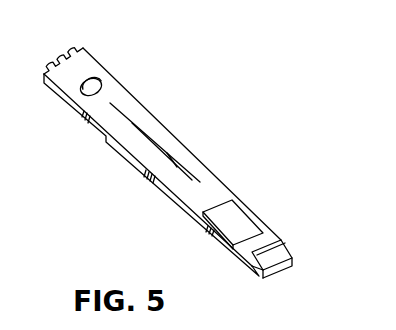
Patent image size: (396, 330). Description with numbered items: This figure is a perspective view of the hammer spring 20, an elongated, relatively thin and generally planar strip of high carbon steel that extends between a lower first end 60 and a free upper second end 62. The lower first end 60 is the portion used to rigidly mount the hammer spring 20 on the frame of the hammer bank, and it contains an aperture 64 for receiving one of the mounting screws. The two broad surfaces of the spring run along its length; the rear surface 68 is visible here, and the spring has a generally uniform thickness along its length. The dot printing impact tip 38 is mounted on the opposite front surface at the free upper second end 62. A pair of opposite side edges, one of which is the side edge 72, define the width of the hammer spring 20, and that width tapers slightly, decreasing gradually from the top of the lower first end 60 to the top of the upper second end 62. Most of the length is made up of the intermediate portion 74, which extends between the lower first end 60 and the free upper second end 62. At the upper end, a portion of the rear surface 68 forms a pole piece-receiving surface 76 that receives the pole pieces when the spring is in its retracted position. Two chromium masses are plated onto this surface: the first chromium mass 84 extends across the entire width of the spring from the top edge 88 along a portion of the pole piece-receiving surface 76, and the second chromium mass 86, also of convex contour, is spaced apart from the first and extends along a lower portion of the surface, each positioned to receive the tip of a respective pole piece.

The hammer spring 20 is at (148, 112).
The dot printing impact tip 38 is at (243, 268).
The lower first end 60 is at (91, 59).
The free upper second end 62 is at (264, 277).
The aperture 64 is at (102, 83).
The rear surface 68 is at (157, 174).
The side edge 72 is at (182, 204).
The intermediate portion 74 is at (175, 153).
The pole piece-receiving surface 76 is at (258, 244).
The first chromium mass 84 is at (282, 259).
The second chromium mass 86 is at (240, 216).
The top edge 88 is at (281, 276).